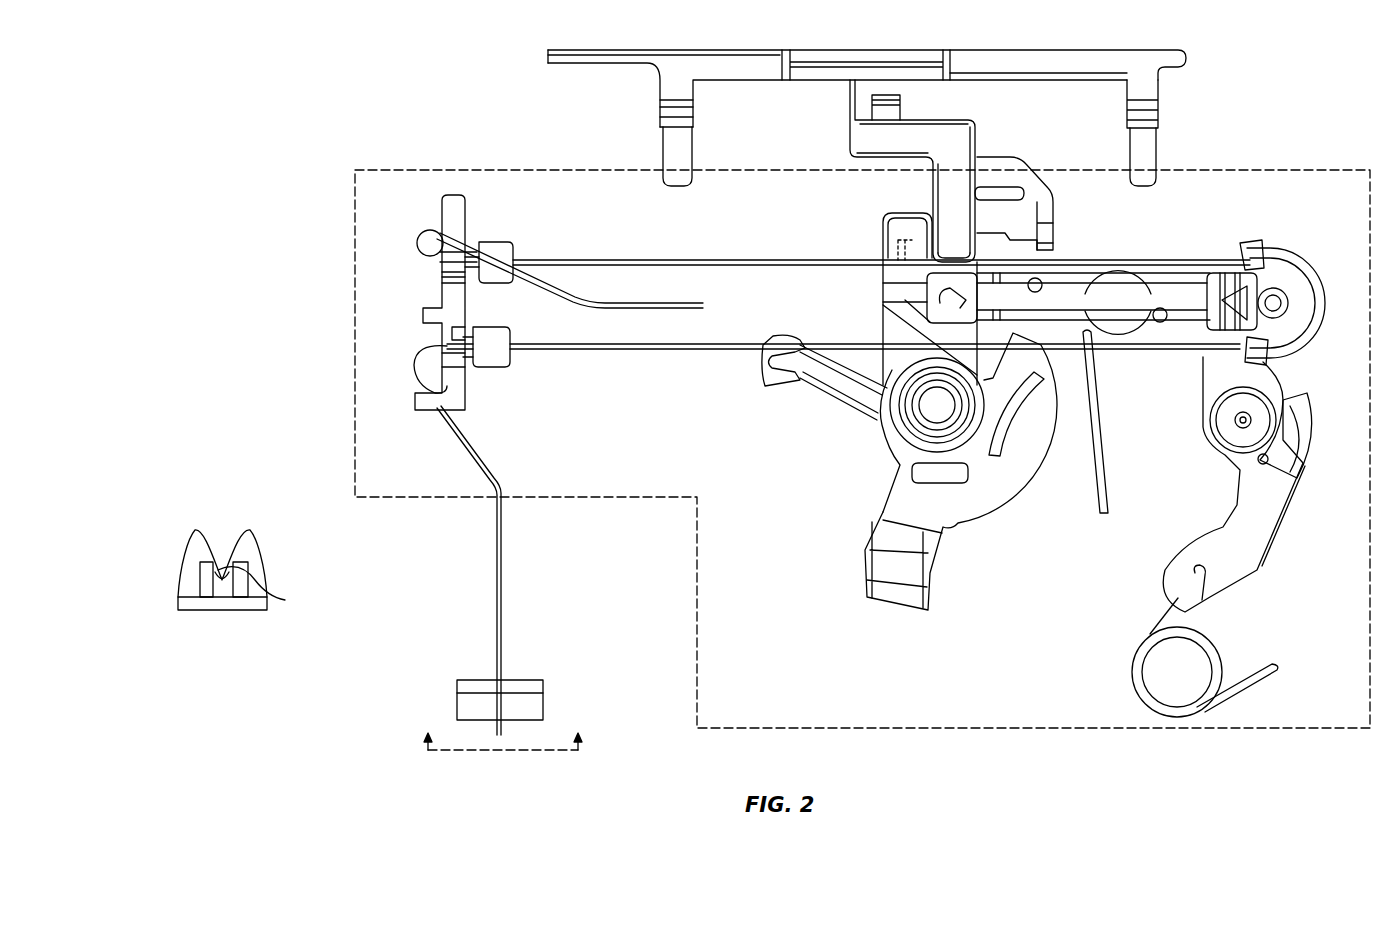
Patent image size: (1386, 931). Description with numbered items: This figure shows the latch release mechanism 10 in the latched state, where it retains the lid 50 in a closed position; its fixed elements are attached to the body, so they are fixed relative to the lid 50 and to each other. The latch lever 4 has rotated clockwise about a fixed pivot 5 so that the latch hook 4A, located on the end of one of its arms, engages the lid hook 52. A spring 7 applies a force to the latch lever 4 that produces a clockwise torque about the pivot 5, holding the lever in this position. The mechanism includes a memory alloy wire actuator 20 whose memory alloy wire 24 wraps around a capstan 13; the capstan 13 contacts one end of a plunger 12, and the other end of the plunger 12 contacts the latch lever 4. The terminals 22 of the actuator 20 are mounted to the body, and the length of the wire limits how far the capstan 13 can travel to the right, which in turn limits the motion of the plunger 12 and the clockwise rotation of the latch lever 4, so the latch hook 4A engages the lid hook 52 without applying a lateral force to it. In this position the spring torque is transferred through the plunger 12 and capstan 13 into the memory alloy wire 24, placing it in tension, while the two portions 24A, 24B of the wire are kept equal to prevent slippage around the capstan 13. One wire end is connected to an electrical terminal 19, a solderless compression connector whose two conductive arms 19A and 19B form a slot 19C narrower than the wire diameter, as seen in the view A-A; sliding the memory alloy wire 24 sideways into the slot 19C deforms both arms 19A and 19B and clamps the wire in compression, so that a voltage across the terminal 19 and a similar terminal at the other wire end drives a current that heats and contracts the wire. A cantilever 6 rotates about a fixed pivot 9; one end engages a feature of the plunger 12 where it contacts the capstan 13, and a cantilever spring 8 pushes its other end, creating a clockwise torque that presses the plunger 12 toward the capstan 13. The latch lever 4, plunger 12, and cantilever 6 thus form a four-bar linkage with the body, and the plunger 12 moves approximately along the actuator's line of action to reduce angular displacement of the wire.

The latch lever 4 is at (898, 484).
The latch hook 4A is at (883, 241).
The fixed pivot 5 is at (930, 412).
The cantilever 6 is at (1268, 505).
The spring 7 is at (1096, 498).
The cantilever spring 8 is at (1205, 645).
The fixed pivot 9 is at (1250, 421).
The latch release mechanism 10 is at (440, 168).
The plunger 12 is at (1113, 300).
The capstan 13 is at (1290, 291).
The electrical terminal 19 is at (437, 683).
The arm 19A is at (473, 686).
The arm 19B is at (517, 686).
The slot 19C is at (217, 528).
The memory alloy wire actuator 20 is at (623, 238).
The terminals 22 is at (419, 262).
The memory alloy wire 24 is at (618, 351).
The portion of the memory alloy wire actuator 24A is at (697, 259).
The portion of the memory alloy wire actuator 24B is at (697, 351).
The lid 50 is at (916, 40).
The lid hook 52 is at (966, 139).